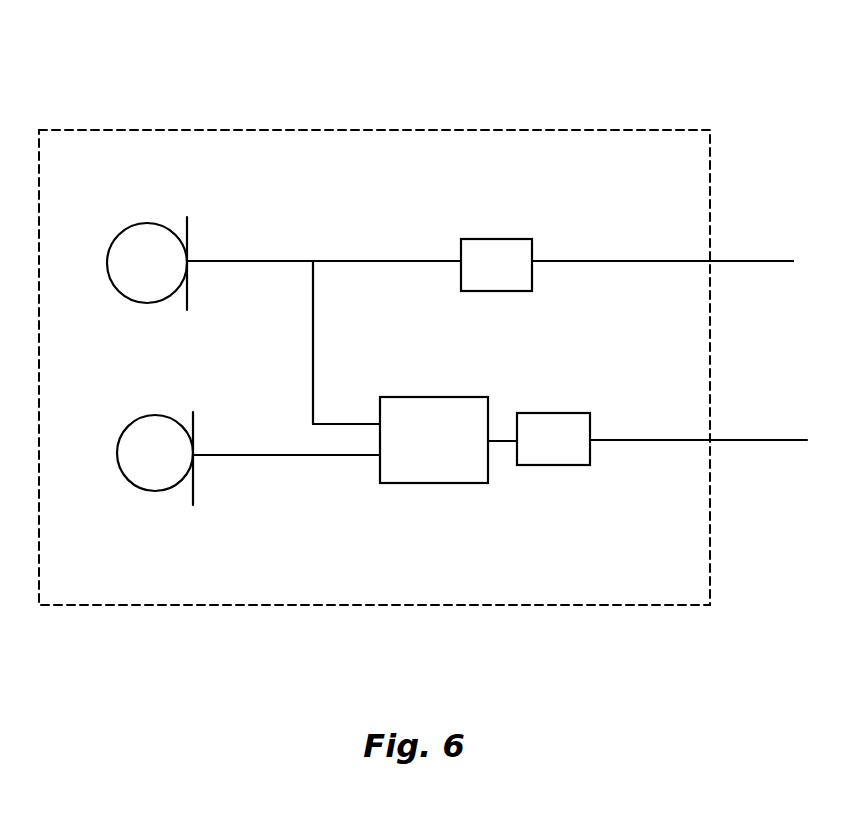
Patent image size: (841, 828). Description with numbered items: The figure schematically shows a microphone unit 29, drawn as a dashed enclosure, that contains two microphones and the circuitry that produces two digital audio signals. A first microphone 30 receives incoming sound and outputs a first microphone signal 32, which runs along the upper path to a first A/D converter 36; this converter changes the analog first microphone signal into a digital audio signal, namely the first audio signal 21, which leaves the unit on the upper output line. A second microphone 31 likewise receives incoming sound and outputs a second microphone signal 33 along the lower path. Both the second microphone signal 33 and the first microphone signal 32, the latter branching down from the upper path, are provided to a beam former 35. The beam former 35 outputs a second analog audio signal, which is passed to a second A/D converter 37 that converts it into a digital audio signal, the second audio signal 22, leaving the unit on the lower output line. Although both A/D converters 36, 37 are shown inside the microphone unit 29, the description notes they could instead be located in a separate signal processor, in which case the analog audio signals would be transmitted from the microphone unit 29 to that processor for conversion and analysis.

The first audio signal 21 is at (756, 260).
The second audio signal 22 is at (765, 440).
The microphone unit 29 is at (364, 130).
The first microphone 30 is at (148, 225).
The second microphone 31 is at (138, 490).
The first microphone signal 32 is at (277, 260).
The second microphone signal 33 is at (252, 456).
The beam former 35 is at (430, 484).
The first A/D converter 36 is at (500, 237).
The second A/D converter 37 is at (568, 460).